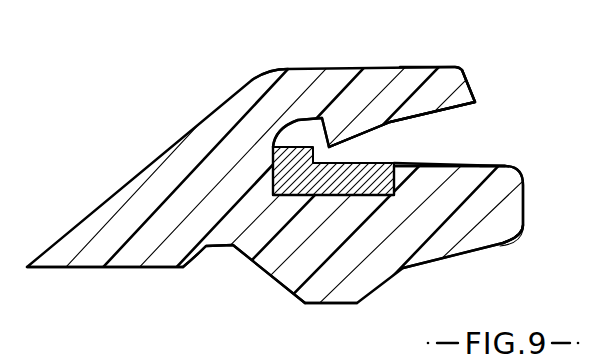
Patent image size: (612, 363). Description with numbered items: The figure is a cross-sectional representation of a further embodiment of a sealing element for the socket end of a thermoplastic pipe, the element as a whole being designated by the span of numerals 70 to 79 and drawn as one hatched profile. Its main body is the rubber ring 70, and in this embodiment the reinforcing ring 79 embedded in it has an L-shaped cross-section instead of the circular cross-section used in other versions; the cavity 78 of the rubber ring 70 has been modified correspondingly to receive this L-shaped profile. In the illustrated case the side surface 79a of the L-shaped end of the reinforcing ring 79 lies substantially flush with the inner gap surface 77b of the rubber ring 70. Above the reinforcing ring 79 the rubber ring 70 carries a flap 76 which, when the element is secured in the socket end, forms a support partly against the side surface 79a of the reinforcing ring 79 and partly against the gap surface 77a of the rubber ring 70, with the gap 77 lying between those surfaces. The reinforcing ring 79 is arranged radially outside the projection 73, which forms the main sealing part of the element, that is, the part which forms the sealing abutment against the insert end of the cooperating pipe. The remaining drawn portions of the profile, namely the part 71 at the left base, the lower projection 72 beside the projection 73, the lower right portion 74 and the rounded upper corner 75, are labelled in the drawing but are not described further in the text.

The rubber ring 70 is at (195, 150).
The left base portion 71 is at (116, 262).
The bottom projection 72 is at (230, 246).
The projection 73 is at (327, 304).
The lower right flange 74 is at (452, 218).
The rounded top corner 75 is at (263, 70).
The flap 76 is at (407, 82).
The groove 77 is at (472, 135).
The gap surface 77a is at (493, 167).
The inner gap surface 77b is at (345, 127).
The cavity 78 is at (312, 130).
The reinforcing ring 79 is at (363, 163).
The side surface 79a is at (395, 160).